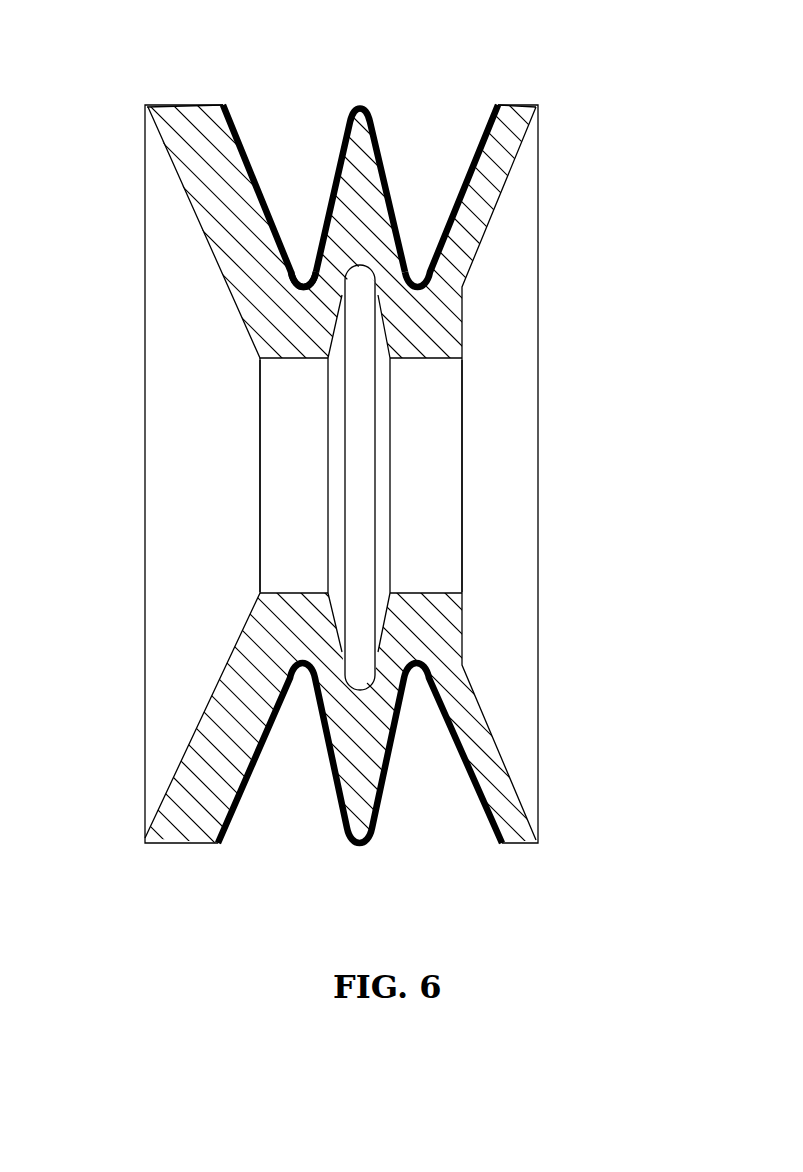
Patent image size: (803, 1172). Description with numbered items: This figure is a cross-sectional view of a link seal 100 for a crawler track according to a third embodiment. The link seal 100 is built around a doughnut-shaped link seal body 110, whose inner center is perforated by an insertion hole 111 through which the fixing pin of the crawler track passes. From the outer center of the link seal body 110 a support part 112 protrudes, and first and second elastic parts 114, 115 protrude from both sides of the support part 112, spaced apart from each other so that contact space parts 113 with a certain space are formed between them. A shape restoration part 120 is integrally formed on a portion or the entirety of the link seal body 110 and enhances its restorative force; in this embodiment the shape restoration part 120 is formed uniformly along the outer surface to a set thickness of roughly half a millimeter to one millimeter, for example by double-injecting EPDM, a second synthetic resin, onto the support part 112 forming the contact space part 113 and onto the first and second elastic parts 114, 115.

The link seal 100 is at (401, 586).
The link seal body 110 is at (176, 466).
The insertion hole 111 is at (418, 507).
The support part 112 is at (388, 133).
The contact space part 113 is at (316, 182).
The first elastic part 114 is at (177, 117).
The second elastic part 115 is at (527, 103).
The shape restoration part 120 is at (333, 787).